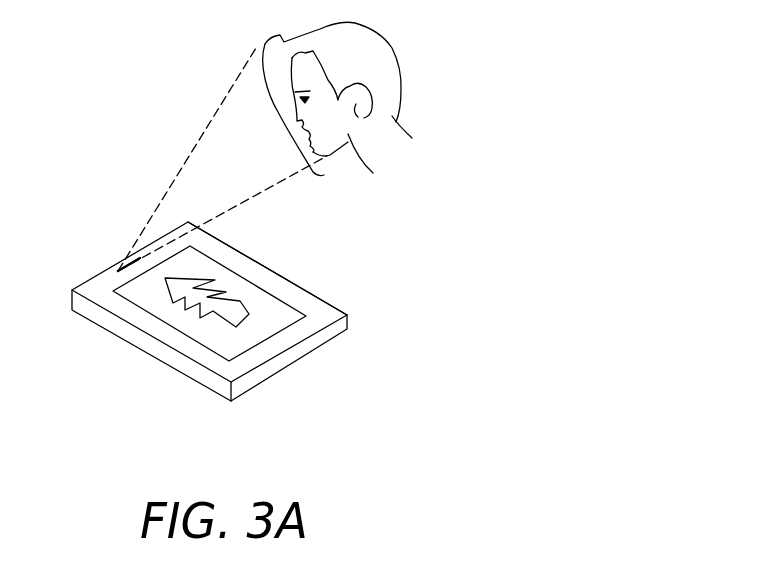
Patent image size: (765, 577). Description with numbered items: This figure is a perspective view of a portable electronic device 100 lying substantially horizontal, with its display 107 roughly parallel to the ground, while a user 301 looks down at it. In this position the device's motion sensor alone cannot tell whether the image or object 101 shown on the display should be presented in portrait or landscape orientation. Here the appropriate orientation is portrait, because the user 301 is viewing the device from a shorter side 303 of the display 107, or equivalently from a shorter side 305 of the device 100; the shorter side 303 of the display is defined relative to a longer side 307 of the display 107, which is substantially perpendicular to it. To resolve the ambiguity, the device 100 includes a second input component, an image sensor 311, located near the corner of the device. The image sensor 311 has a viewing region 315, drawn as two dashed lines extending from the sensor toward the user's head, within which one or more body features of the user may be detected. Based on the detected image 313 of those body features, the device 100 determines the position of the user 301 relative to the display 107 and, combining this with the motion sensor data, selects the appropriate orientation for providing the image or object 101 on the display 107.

The portable electronic device 100 is at (225, 322).
The image or object 101 is at (238, 298).
The display 107 is at (152, 288).
The user 301 is at (339, 98).
The shorter side of the display 303 is at (277, 335).
The shorter side of the device 305 is at (214, 253).
The longer side of the display 307 is at (322, 300).
The image sensor 311 is at (114, 273).
The detected image 313 is at (279, 112).
The viewing region 315 is at (204, 130).